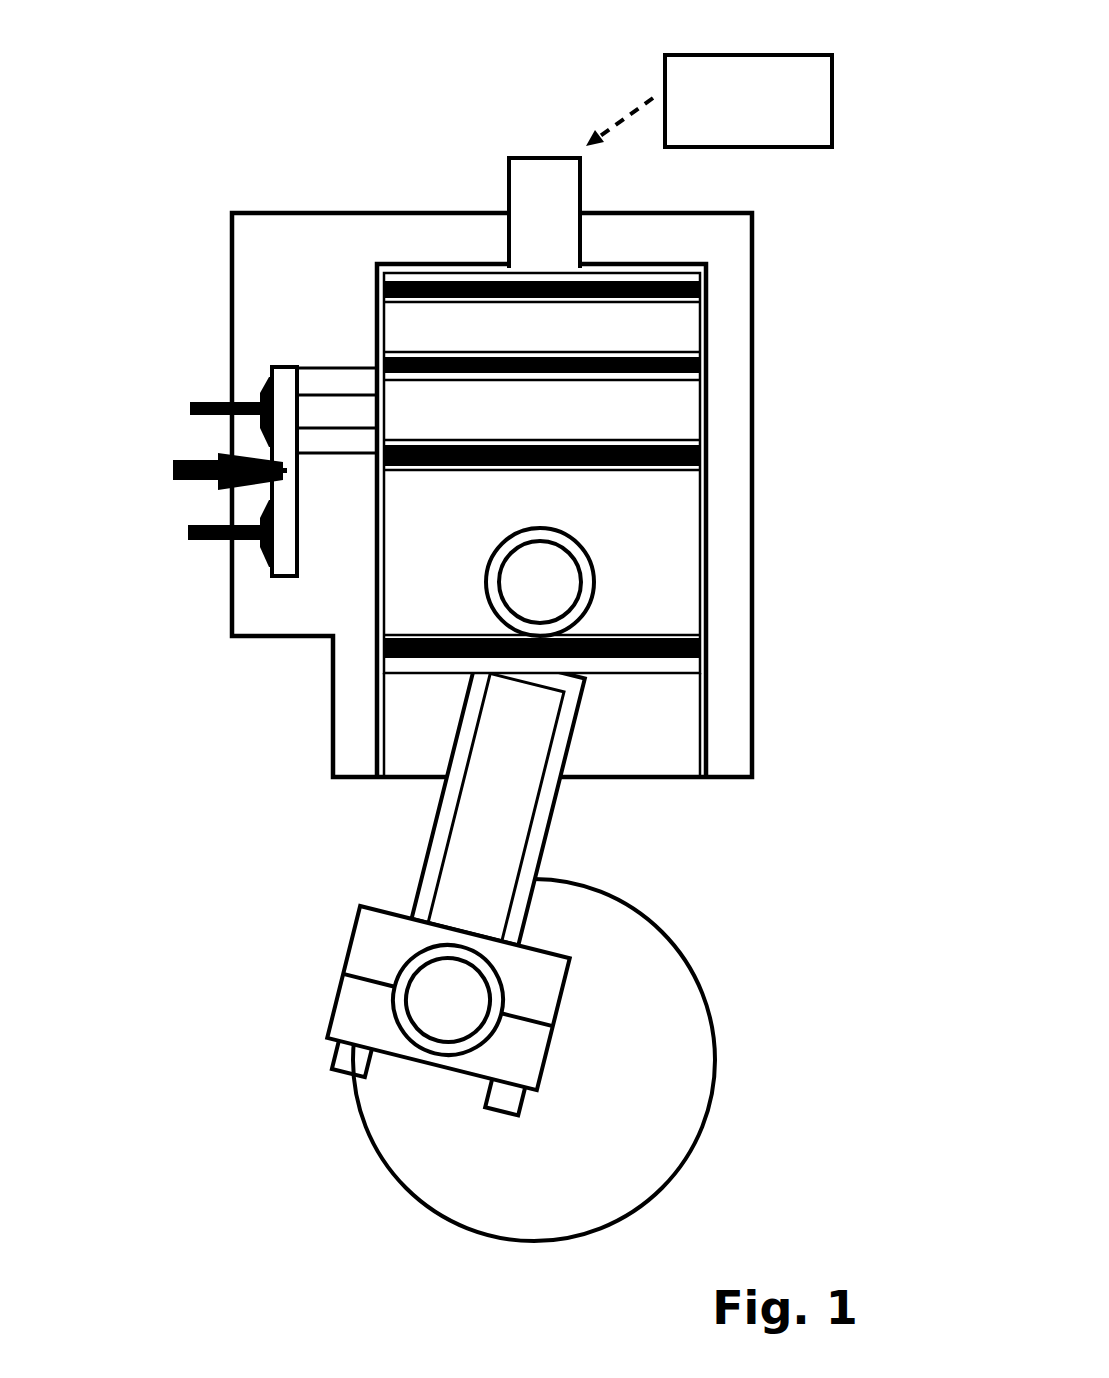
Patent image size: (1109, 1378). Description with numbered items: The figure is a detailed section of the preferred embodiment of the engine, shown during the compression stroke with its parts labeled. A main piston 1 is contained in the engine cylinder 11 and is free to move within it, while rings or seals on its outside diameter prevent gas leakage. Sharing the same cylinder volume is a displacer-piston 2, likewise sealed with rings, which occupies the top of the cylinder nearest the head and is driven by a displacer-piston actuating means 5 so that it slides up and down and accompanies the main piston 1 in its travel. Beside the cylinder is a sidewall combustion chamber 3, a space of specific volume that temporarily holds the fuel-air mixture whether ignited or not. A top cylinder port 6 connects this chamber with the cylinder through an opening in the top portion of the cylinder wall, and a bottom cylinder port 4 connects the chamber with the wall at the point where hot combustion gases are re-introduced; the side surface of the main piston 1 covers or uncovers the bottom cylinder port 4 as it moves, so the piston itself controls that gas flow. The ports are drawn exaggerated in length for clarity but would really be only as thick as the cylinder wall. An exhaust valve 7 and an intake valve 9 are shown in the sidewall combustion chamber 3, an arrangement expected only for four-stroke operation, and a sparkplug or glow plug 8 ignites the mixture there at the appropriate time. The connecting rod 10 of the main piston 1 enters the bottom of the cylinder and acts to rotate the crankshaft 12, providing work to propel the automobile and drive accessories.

The main piston 1 is at (680, 545).
The displacer-piston 2 is at (683, 328).
The sidewall combustion chamber 3 is at (285, 558).
The bottom cylinder port 4 is at (342, 440).
The displacer-piston actuating means 5 is at (778, 75).
The top cylinder port 6 is at (327, 377).
The exhaust valve 7 is at (213, 402).
The sparkplug or glow plug 8 is at (185, 458).
The intake valve 9 is at (190, 530).
The connecting rod 10 is at (518, 813).
The engine cylinder 11 is at (392, 747).
The crankshaft 12 is at (670, 1082).